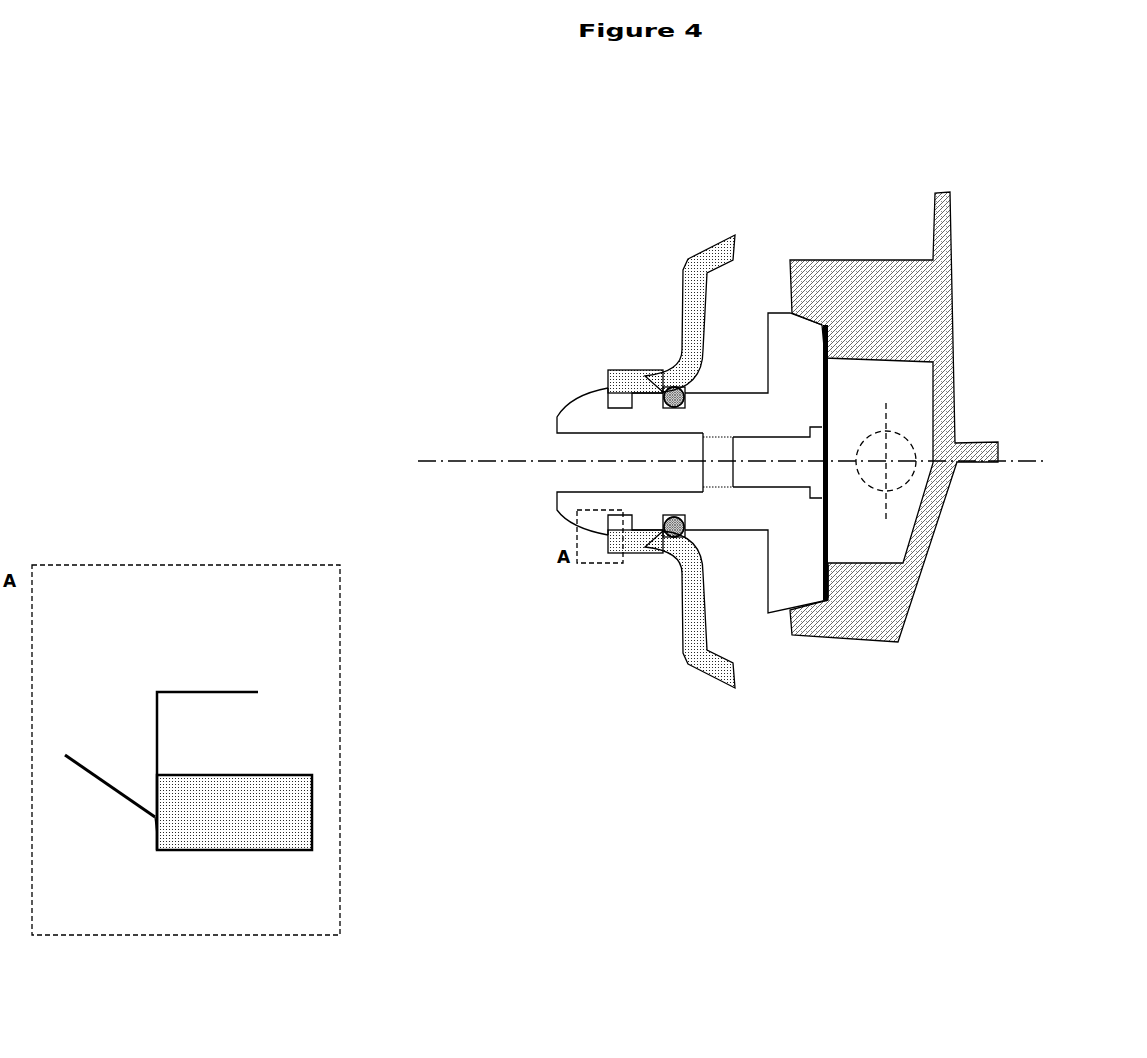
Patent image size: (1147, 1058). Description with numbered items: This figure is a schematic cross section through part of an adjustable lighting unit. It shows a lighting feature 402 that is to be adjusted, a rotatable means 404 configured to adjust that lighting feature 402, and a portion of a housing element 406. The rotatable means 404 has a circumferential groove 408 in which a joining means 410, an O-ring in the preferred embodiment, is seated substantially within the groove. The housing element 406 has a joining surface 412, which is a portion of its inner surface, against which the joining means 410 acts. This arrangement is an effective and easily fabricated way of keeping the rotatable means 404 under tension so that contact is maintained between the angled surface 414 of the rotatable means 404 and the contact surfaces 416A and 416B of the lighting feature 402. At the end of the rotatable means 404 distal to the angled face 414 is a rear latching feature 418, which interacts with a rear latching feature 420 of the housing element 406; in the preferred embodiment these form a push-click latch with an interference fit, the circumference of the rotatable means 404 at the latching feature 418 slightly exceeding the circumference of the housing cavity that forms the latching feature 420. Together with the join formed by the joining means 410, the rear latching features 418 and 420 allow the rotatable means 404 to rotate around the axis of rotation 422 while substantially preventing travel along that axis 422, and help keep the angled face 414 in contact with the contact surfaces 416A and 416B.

The lighting feature 402 is at (952, 228).
The rotatable means 404 is at (557, 417).
The housing element 406 is at (712, 243).
The circumferential groove 408 is at (672, 514).
The joining means 410 is at (648, 387).
The joining surface 412 is at (670, 377).
The angled surface 414 is at (830, 522).
The contact surface 416A is at (827, 343).
The contact surface 416B is at (832, 588).
The rear latching feature 418 is at (147, 798).
The rear latching feature 420 is at (155, 837).
The axis of rotation 422 is at (1037, 462).